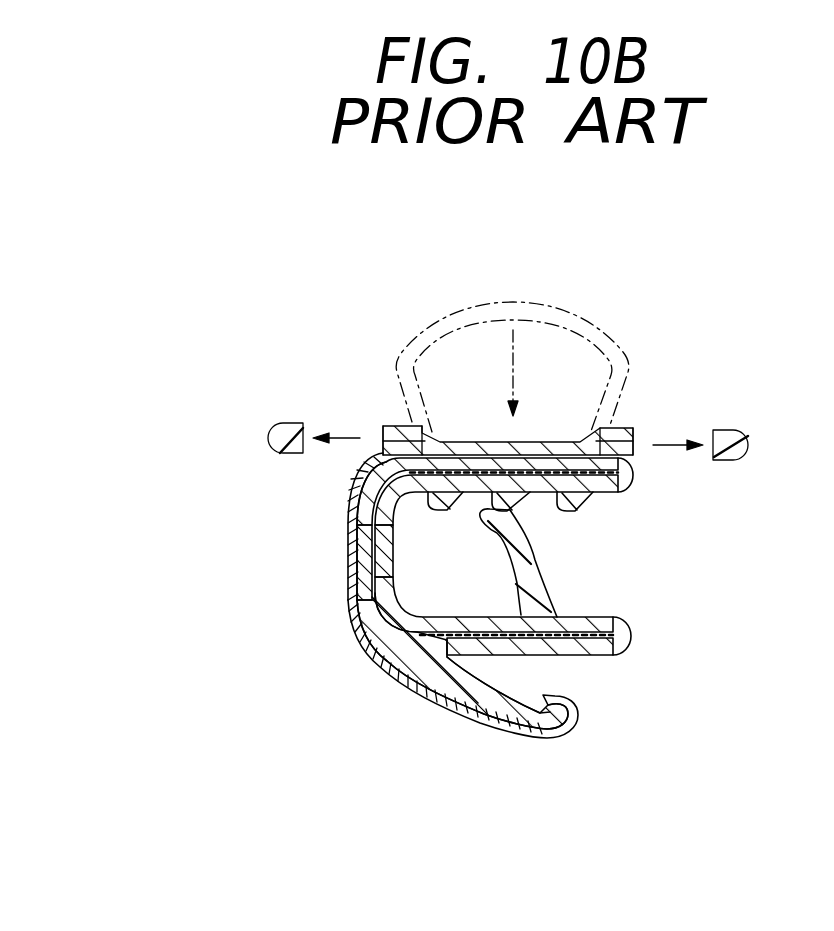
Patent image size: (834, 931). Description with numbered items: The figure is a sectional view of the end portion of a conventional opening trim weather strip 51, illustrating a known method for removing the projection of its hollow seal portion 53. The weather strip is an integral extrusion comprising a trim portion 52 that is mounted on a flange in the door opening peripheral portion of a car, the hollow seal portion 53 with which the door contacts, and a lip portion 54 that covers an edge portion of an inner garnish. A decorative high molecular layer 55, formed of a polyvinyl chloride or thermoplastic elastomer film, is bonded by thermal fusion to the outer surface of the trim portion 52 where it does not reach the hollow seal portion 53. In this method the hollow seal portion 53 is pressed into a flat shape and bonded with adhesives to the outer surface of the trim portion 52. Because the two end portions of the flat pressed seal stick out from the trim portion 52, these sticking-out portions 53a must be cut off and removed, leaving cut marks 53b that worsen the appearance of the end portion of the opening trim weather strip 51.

The opening trim weather strip 51 is at (419, 320).
The trim portion 52 is at (360, 540).
The hollow seal portion 53 is at (477, 441).
The sticking-out portions 53a is at (293, 425).
The cut marks 53b is at (383, 426).
The lip portion 54 is at (488, 708).
The decorative high molecular layer 55 is at (360, 475).